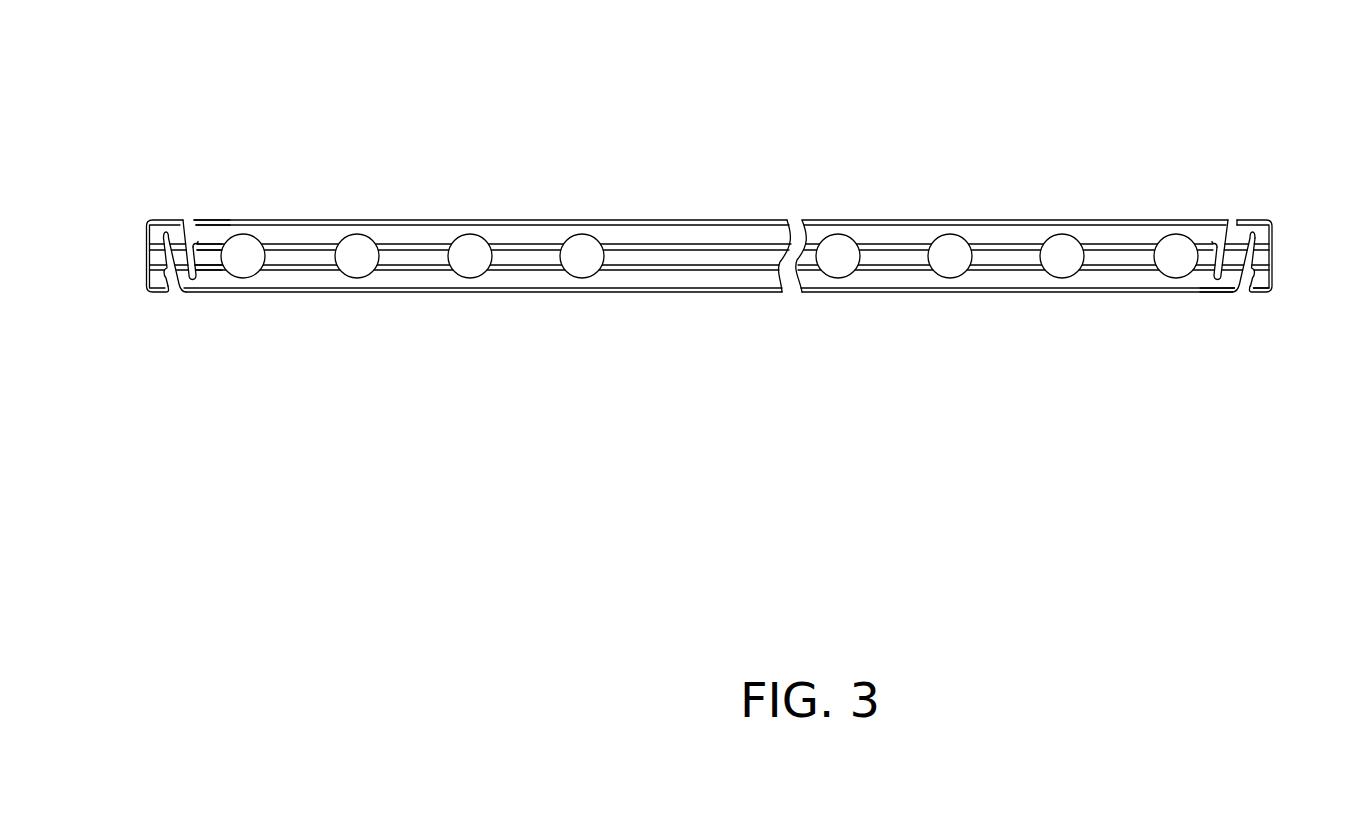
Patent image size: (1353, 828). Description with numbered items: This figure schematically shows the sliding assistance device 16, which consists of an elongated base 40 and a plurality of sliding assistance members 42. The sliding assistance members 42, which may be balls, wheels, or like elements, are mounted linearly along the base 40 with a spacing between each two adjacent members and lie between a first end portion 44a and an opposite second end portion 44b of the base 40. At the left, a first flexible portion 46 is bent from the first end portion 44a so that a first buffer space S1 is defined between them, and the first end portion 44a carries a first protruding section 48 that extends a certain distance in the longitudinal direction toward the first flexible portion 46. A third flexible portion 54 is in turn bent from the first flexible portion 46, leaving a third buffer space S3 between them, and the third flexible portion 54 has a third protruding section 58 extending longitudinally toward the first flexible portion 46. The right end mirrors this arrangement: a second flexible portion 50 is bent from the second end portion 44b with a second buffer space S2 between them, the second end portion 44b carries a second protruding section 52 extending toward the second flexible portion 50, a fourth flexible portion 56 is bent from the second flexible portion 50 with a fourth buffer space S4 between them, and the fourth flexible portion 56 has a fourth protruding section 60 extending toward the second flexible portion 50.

The sliding assistance device 16 is at (703, 118).
The base 40 is at (631, 280).
The sliding assistance members 42 is at (468, 245).
The first end portion 44a is at (205, 262).
The second end portion 44b is at (1210, 258).
The first flexible portion 46 is at (180, 255).
The first protruding section 48 is at (199, 232).
The second flexible portion 50 is at (1250, 238).
The second protruding section 52 is at (1221, 240).
The third flexible portion 54 is at (145, 257).
The fourth flexible portion 56 is at (1266, 256).
The third protruding section 58 is at (167, 285).
The fourth protruding section 60 is at (1253, 283).
The first buffer space S1 is at (189, 226).
The second buffer space S2 is at (1228, 227).
The third buffer space S3 is at (173, 283).
The fourth buffer space S4 is at (1247, 282).